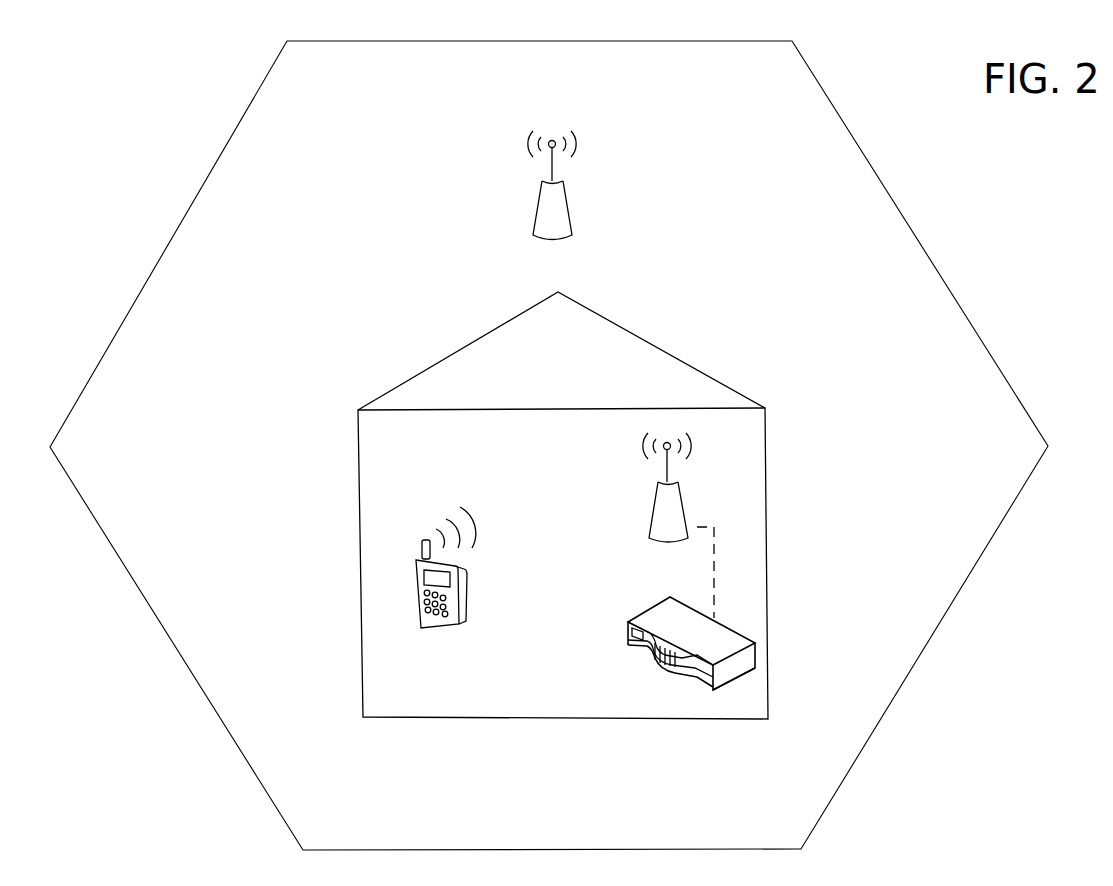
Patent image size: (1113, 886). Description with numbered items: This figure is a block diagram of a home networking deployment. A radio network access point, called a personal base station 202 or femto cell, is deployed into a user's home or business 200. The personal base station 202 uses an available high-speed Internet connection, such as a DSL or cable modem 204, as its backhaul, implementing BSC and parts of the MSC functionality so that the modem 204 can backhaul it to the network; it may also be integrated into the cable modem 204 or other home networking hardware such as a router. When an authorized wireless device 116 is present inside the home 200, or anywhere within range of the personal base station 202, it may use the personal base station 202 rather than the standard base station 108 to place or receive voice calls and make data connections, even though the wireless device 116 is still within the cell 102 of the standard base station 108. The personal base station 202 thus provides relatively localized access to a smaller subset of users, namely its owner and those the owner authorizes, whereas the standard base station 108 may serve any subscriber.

The cell 102 is at (226, 110).
The standard base station 108 is at (530, 235).
The home or business 200 is at (502, 718).
The personal base station 202 is at (645, 537).
The cable modem 204 is at (688, 651).
The wireless device 116 is at (418, 618).